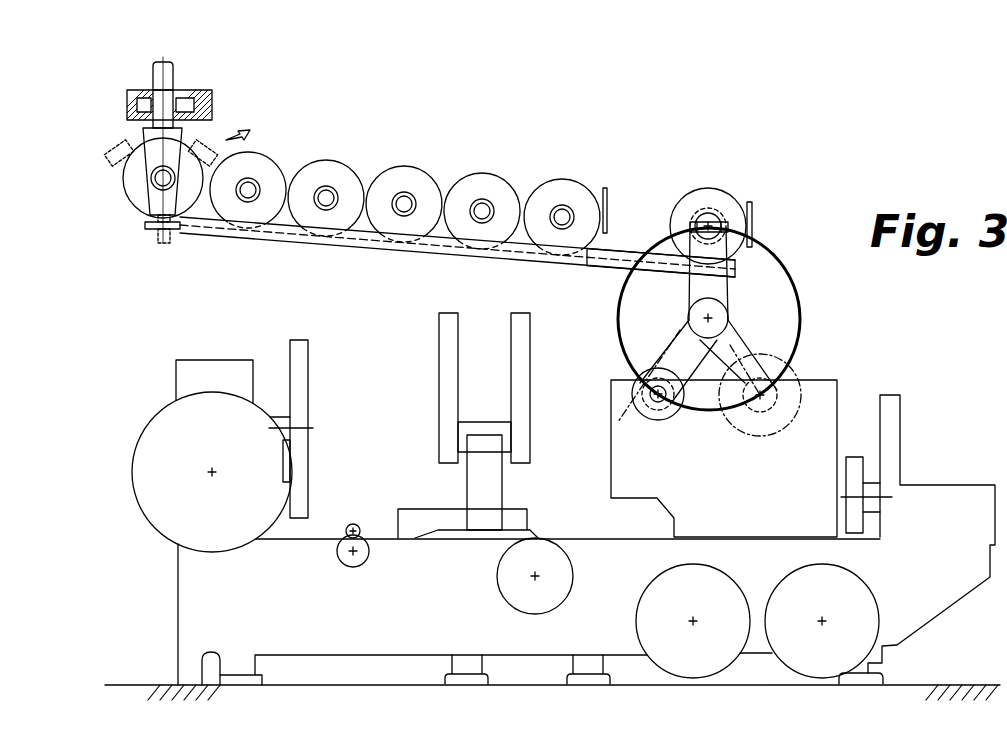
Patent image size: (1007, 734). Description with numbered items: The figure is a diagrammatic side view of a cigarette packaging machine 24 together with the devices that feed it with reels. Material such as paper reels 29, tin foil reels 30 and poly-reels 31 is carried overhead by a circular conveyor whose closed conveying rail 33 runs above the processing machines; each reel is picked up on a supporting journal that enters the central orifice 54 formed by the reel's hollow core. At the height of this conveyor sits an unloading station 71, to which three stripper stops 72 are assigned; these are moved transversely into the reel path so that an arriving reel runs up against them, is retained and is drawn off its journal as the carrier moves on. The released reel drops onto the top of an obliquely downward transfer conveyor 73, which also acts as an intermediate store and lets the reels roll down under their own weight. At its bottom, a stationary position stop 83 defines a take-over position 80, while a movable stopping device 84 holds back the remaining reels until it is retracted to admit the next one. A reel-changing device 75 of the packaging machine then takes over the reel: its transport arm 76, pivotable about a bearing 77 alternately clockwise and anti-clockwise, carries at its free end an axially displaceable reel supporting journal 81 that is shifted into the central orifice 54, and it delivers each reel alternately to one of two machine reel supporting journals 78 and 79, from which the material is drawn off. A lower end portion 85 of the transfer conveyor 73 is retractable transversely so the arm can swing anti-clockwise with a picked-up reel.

The cigarette packaging machine 24 is at (168, 557).
The paper reels 29 is at (422, 180).
The tin foil reels 30 is at (248, 190).
The poly-reels 31 is at (562, 217).
The conveying rail 33 is at (224, 77).
The central orifice 54 is at (560, 213).
The unloading station 71 is at (124, 137).
The stripper stops 72 is at (200, 150).
The transfer conveyor 73 is at (285, 248).
The reel-changing device 75 is at (752, 303).
The transport arm 76 is at (717, 290).
The bearing 77 is at (720, 323).
The reel supporting journal 78 is at (613, 437).
The reel supporting journal 79 is at (770, 398).
The take-over position 80 is at (698, 172).
The axially displaceable reel supporting journal 81 is at (734, 159).
The position stop 83 is at (728, 226).
The stopping device 84 is at (606, 232).
The lower end portion 85 is at (610, 253).